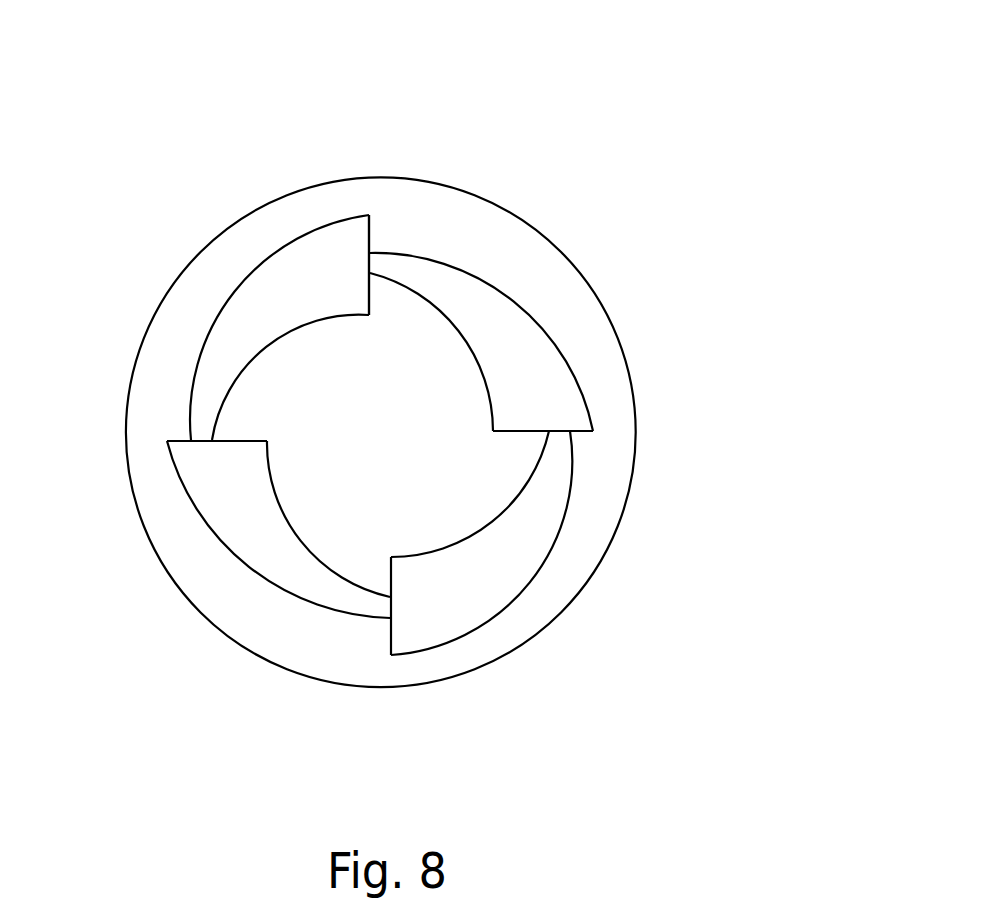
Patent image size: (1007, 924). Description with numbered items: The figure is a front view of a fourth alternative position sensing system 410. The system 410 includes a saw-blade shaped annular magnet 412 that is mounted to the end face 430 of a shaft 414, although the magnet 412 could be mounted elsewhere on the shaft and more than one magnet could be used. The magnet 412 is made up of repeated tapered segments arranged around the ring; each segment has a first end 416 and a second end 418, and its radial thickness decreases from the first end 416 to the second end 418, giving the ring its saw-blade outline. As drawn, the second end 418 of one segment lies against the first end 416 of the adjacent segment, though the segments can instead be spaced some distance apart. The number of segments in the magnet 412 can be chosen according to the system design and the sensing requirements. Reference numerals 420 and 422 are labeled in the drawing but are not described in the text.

The alternative system 410 is at (372, 345).
The saw-blade shaped annular magnet 412 is at (203, 357).
The shaft 414 is at (612, 311).
The first end 416 is at (372, 222).
The second end 418 is at (214, 436).
The curved blade 420 is at (242, 282).
The blade inner surface 422 is at (341, 322).
The end face 430 is at (582, 547).